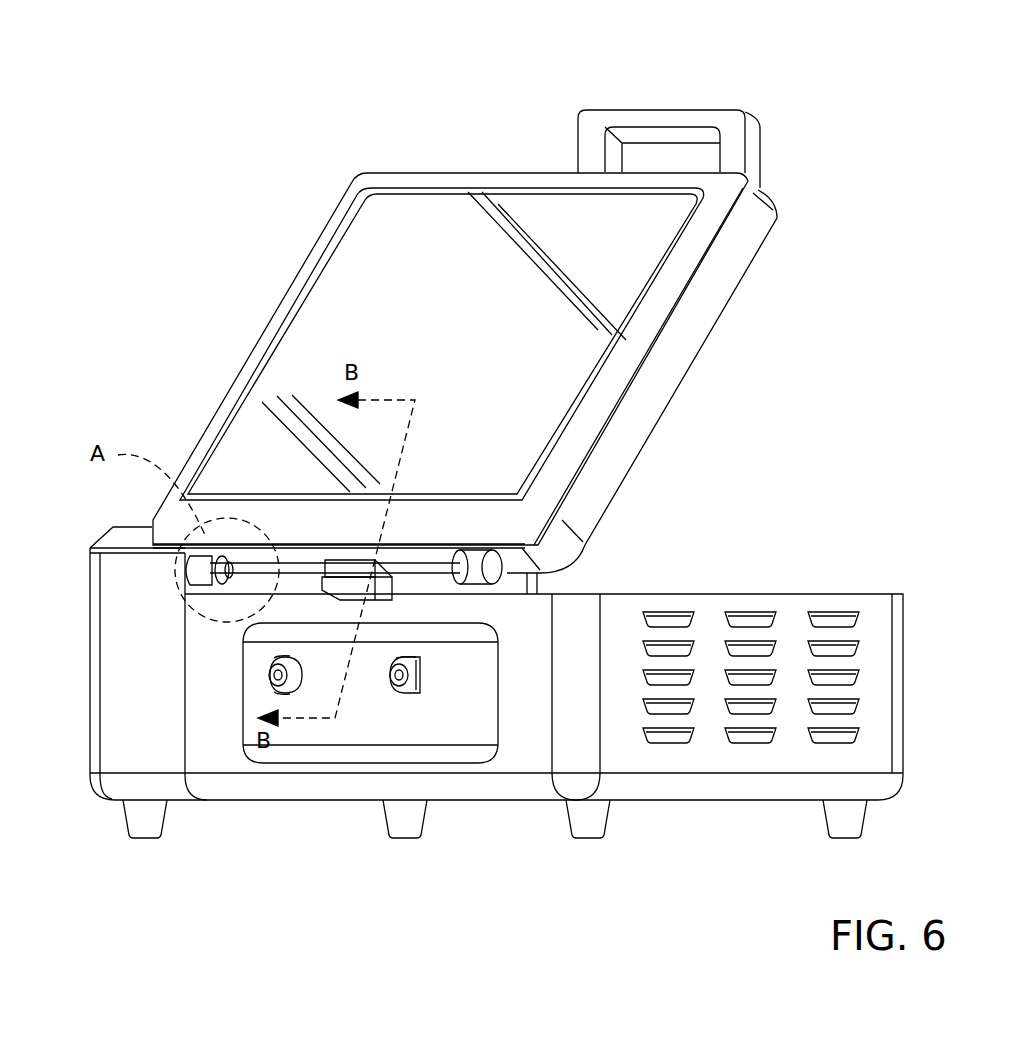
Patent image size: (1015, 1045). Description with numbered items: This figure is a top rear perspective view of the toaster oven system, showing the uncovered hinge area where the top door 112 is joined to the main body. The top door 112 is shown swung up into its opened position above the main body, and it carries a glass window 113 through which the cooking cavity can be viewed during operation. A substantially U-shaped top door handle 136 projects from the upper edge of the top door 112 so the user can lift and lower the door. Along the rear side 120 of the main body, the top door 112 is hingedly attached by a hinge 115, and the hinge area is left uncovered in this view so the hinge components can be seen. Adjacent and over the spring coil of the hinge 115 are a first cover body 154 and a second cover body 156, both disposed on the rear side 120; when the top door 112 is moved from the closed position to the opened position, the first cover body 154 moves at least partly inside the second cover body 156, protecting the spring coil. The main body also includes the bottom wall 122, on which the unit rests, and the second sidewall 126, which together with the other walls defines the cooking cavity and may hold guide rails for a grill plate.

The top door 112 is at (374, 172).
The glass window 113 is at (337, 308).
The hinge 115 is at (192, 594).
The rear side 120 is at (520, 725).
The bottom wall 122 is at (690, 800).
The second sidewall 126 is at (875, 698).
The top door handle 136 is at (657, 110).
The first cover body 154 is at (327, 573).
The second cover body 156 is at (380, 560).